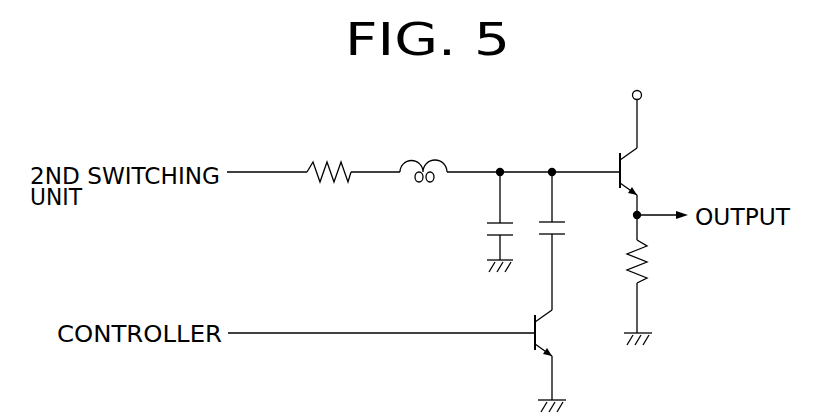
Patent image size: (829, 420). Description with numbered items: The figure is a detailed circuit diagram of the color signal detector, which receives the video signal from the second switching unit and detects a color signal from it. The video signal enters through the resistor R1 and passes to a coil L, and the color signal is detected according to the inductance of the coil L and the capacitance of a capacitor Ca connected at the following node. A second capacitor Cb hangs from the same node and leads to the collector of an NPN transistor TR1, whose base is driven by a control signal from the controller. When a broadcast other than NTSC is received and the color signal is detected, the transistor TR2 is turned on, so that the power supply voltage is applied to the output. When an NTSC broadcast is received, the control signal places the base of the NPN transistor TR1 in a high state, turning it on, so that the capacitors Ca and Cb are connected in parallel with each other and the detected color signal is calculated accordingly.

The resistor R1 is at (329, 155).
The coil L is at (423, 155).
The capacitor Ca is at (479, 222).
The capacitor Cb is at (573, 241).
The NPN transistor TR1 is at (574, 361).
The transistor TR2 is at (654, 149).